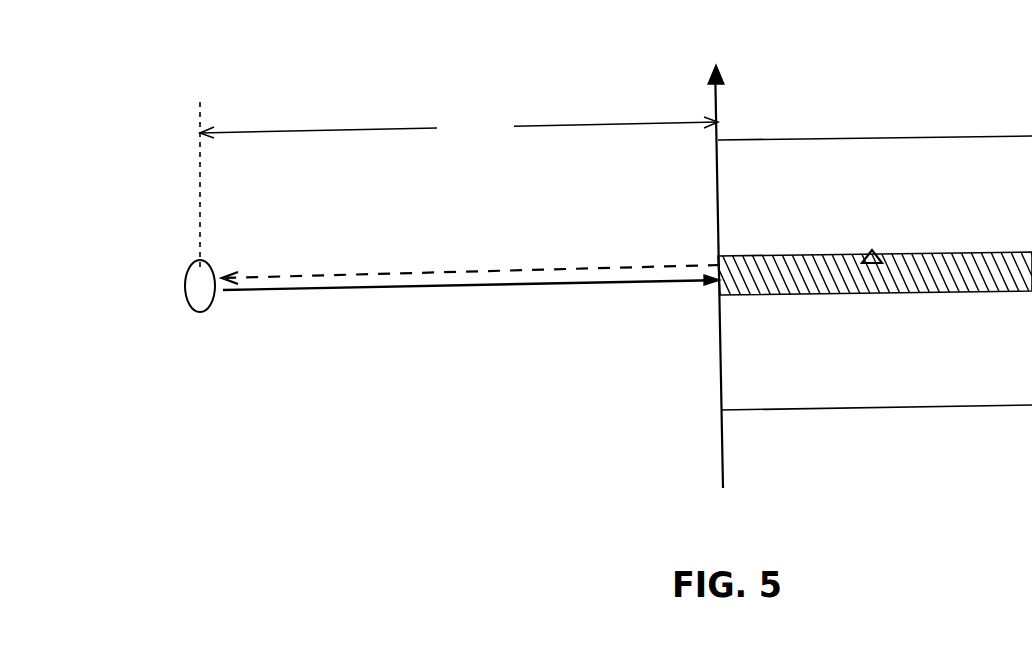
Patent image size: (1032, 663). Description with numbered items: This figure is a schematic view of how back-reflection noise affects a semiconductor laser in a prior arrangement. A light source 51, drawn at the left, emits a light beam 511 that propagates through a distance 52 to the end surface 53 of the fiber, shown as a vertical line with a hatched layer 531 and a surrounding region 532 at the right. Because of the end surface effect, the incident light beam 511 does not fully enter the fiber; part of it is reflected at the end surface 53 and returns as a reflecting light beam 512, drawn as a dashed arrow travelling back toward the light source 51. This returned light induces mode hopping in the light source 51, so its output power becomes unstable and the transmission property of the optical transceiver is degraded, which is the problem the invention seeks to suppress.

The light source 51 is at (166, 286).
The distance 52 is at (459, 187).
The end surface 53 is at (698, 257).
The light beam 511 is at (471, 297).
The reflecting light beam 512 is at (471, 256).
The sensing layer 531 is at (878, 254).
The sensor region 532 is at (875, 273).